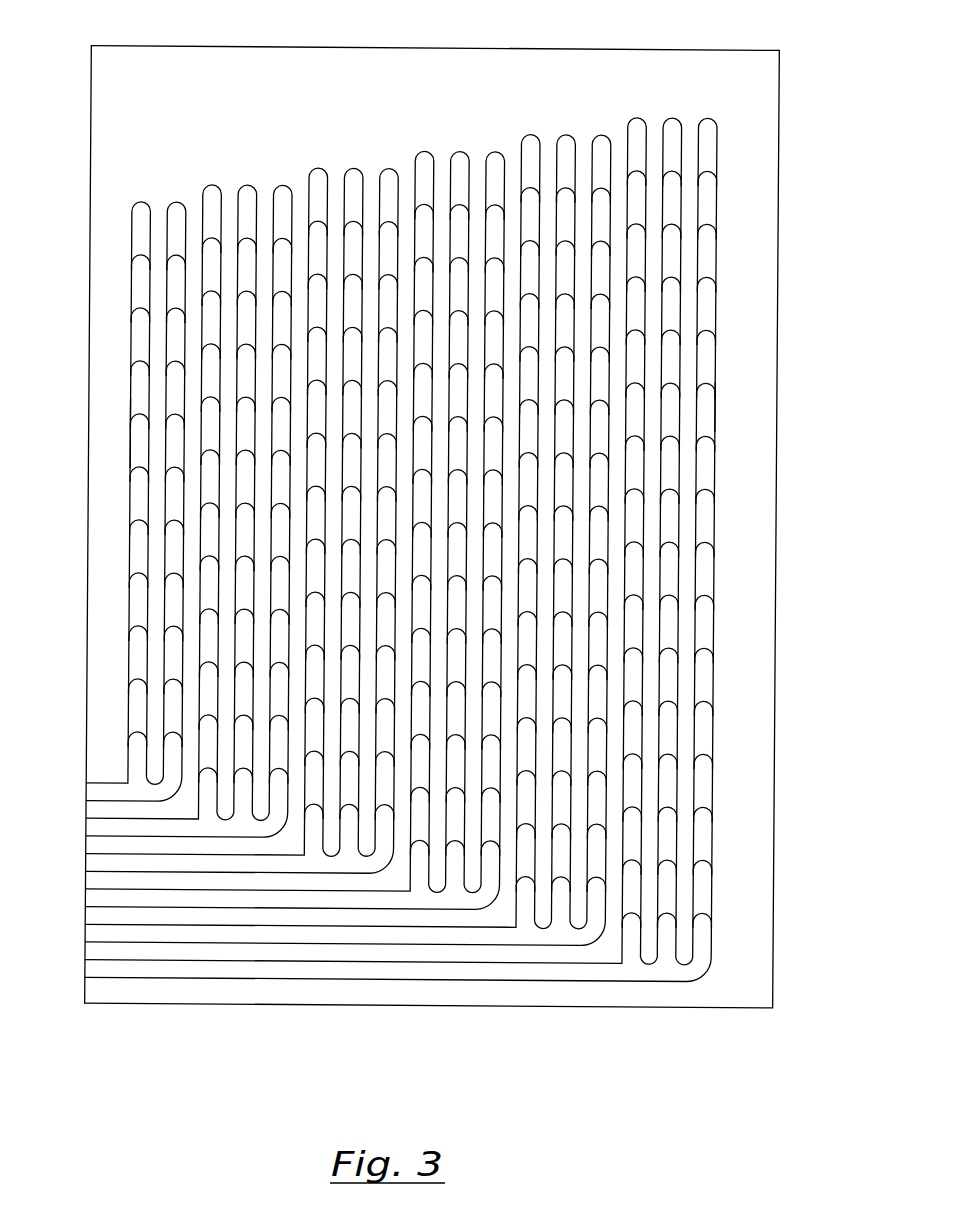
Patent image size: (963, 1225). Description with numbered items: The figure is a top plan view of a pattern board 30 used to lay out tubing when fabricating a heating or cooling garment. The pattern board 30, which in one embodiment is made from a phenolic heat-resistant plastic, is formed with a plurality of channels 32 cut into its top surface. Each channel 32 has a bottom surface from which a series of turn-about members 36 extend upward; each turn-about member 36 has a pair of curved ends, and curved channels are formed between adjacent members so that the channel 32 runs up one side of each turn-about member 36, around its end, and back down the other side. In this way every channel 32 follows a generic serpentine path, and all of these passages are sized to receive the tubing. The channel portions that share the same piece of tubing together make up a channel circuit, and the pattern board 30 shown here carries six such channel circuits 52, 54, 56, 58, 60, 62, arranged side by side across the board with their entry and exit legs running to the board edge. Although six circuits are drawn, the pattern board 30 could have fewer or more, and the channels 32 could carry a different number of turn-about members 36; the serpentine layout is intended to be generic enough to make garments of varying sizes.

The pattern board 30 is at (118, 60).
The channel 32 is at (127, 434).
The turn-about member 36 is at (138, 339).
The channel circuit 52 is at (187, 193).
The channel circuit 54 is at (293, 178).
The channel circuit 56 is at (399, 160).
The channel circuit 58 is at (505, 146).
The channel circuit 60 is at (611, 125).
The channel circuit 62 is at (717, 109).